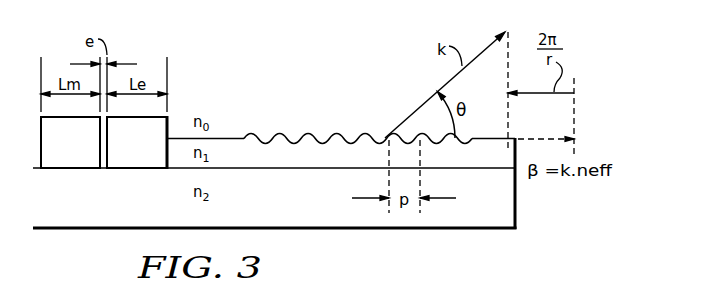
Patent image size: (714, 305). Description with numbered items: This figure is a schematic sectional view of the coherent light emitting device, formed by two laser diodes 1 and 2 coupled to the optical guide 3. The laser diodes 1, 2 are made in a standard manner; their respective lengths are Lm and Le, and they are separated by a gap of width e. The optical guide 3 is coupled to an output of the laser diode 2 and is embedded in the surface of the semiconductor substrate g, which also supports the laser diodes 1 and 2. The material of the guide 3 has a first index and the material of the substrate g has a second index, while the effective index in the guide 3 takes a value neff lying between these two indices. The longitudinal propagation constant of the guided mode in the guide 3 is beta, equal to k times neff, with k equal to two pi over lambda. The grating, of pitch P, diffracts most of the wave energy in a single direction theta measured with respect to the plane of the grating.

The laser diode 1 is at (72, 163).
The laser diode 2 is at (138, 163).
The optical guide 3 is at (340, 143).
The substrate g is at (348, 213).